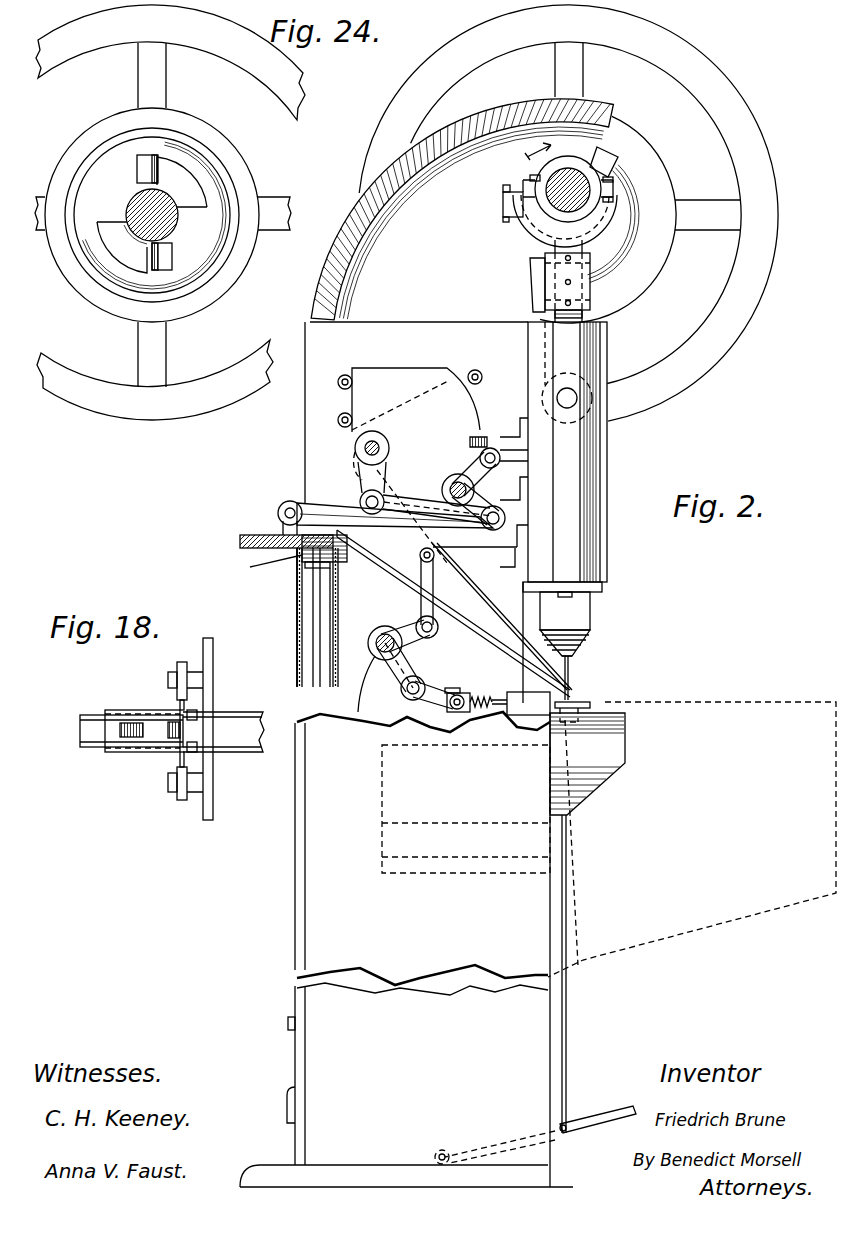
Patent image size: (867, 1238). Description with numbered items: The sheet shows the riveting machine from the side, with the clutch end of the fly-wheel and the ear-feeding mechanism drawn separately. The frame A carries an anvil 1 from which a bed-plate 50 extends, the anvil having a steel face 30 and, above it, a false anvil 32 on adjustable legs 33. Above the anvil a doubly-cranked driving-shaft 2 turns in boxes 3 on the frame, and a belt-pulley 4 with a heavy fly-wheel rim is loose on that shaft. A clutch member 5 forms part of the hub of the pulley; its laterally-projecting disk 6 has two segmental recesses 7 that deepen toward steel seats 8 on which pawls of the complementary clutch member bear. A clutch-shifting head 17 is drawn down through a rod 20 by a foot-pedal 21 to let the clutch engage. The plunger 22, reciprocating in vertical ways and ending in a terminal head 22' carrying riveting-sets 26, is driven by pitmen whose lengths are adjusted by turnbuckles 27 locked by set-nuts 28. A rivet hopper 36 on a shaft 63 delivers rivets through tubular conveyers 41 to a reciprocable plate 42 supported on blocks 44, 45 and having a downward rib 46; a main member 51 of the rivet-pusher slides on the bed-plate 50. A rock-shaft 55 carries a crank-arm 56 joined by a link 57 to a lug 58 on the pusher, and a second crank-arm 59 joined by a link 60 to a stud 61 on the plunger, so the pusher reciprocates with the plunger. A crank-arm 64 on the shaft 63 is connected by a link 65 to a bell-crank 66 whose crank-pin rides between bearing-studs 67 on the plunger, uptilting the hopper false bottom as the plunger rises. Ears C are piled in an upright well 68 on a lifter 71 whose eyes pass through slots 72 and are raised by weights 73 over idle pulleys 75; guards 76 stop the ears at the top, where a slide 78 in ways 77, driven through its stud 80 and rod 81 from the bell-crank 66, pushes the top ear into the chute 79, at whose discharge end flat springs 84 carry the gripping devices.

In FIG. 2, the anvil 1 is at (598, 743).
In FIG. 24, the driving-shaft 2 is at (177, 222).
In FIG. 2, the driving-shaft 2 is at (581, 207).
In FIG. 2, the boxes 3 is at (608, 243).
In FIG. 24, the belt-pulley 4 is at (170, 212).
In FIG. 2, the belt-pulley 4 is at (568, 213).
In FIG. 24, the clutch member 5 is at (196, 128).
In FIG. 24, the disk 6 is at (152, 215).
In FIG. 24, the segmental recesses 7 is at (152, 215).
In FIG. 24, the steel seats 8 is at (137, 167).
In FIG. 2, the clutch-shifting head 17 is at (297, 591).
In FIG. 2, the rod 20 is at (567, 1023).
In FIG. 2, the foot-pedal 21 is at (594, 1116).
In FIG. 24, the plunger 22 is at (165, 189).
In FIG. 2, the plunger 22 is at (577, 418).
In FIG. 2, the terminal head 22' is at (585, 624).
In FIG. 2, the riveting-sets 26 is at (578, 660).
In FIG. 2, the turnbuckles 27 is at (530, 284).
In FIG. 2, the set-nuts 28 is at (531, 265).
In FIG. 2, the steel face 30 is at (617, 712).
In FIG. 2, the false anvil 32 is at (588, 700).
In FIG. 2, the adjustable legs 33 is at (565, 725).
In FIG. 2, the hopper 36 is at (382, 372).
In FIG. 2, the tubular conveyers 41 is at (480, 600).
In FIG. 2, the reciprocable plate 42 is at (497, 697).
In FIG. 2, the block 44 is at (528, 703).
In FIG. 2, the block 45 is at (452, 693).
In FIG. 2, the rib 46 is at (478, 709).
In FIG. 2, the bed-plate 50 is at (447, 727).
In FIG. 2, the main member 51 is at (481, 713).
In FIG. 2, the rock-shaft 55 is at (370, 645).
In FIG. 2, the crank-arm 56 is at (398, 686).
In FIG. 2, the link 57 is at (428, 683).
In FIG. 2, the lug 58 is at (470, 690).
In FIG. 2, the crank-arm 59 is at (403, 625).
In FIG. 2, the link 60 is at (421, 568).
In FIG. 2, the stud 61 is at (475, 554).
In FIG. 2, the shaft 63 is at (381, 447).
In FIG. 2, the crank-arm 64 is at (360, 478).
In FIG. 2, the link 65 is at (415, 498).
In FIG. 2, the bell-crank 66 is at (497, 508).
In FIG. 2, the bearing-studs 67 is at (506, 436).
In FIG. 2, the well 68 is at (297, 636).
In FIG. 18, the well 68 is at (182, 755).
In FIG. 2, the lifter 71 is at (340, 565).
In FIG. 2, the slots 72 is at (313, 660).
In FIG. 2, the weights 73 is at (287, 1108).
In FIG. 18, the idle pulleys 75 is at (170, 677).
In FIG. 18, the guards 76 is at (194, 709).
In FIG. 18, the ways 77 is at (124, 752).
In FIG. 2, the slide 78 is at (242, 535).
In FIG. 18, the slide 78 is at (80, 728).
In FIG. 2, the chute 79 is at (372, 556).
In FIG. 18, the chute 79 is at (248, 733).
In FIG. 2, the stud 80 is at (279, 511).
In FIG. 18, the stud 80 is at (120, 731).
In FIG. 2, the rod 81 is at (310, 503).
In FIG. 2, the flat springs 84 is at (569, 681).
In FIG. 2, the frame A is at (295, 900).
In FIG. 2, the ears C is at (268, 568).